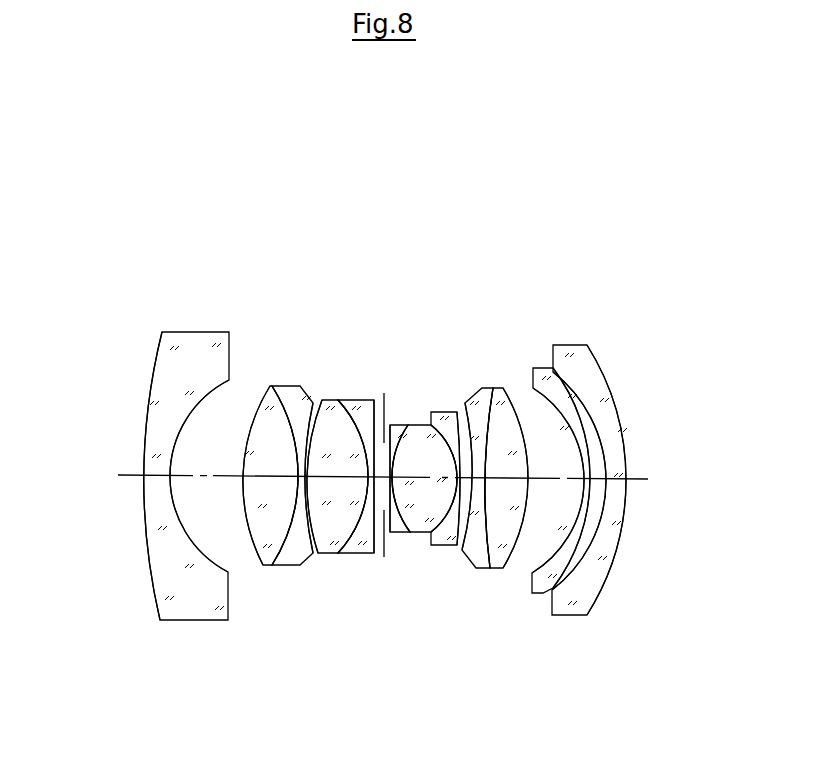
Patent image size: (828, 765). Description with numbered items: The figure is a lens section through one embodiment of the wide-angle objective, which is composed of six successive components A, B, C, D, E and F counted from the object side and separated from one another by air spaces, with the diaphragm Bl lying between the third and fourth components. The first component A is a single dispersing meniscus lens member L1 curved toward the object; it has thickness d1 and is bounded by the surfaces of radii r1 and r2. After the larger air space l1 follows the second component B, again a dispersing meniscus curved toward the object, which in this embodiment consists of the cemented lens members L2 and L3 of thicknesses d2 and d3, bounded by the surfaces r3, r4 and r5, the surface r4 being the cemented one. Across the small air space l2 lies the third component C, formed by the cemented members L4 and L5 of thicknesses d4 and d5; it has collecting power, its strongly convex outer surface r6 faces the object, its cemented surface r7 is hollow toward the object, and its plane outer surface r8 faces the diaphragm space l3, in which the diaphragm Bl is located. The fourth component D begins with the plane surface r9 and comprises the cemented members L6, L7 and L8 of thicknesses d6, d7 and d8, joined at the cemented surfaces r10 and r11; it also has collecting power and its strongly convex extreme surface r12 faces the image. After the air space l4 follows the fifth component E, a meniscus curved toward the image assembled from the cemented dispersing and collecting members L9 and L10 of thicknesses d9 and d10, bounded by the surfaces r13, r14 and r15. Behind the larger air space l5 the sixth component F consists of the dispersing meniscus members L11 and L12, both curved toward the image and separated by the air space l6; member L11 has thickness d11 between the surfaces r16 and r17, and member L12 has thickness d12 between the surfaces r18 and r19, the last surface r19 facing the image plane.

The first lens component A is at (90, 135).
The second lens component B is at (203, 140).
The third lens component C is at (310, 140).
The fourth lens component D is at (453, 143).
The fifth lens component E is at (558, 143).
The sixth lens component F is at (702, 147).
The diaphragm Bl is at (398, 458).
The dispersing meniscus lens member L1 is at (89, 207).
The lens member L2 is at (160, 207).
The lens member L3 is at (195, 207).
The lens member L4 is at (267, 207).
The lens member L5 is at (302, 207).
The lens member L6 is at (374, 207).
The lens member L7 is at (408, 207).
The lens member L8 is at (444, 207).
The lens member L9 is at (515, 207).
The lens member L10 is at (550, 207).
The dispersing meniscus lens member L11 is at (619, 207).
The dispersing meniscus lens member L12 is at (693, 207).
The lens thickness d1 is at (155, 475).
The lens thickness d2 is at (263, 476).
The lens thickness d3 is at (302, 476).
The lens thickness d4 is at (333, 477).
The lens thickness d5 is at (375, 477).
The lens thickness d6 is at (393, 424).
The lens thickness d7 is at (417, 477).
The lens thickness d8 is at (460, 411).
The lens thickness d9 is at (483, 388).
The lens thickness d10 is at (503, 388).
The lens thickness d11 is at (585, 478).
The lens thickness d12 is at (625, 479).
The air space l1 is at (190, 476).
The air space l2 is at (308, 392).
The air space l3 is at (389, 442).
The air space l4 is at (472, 478).
The air space l5 is at (547, 478).
The air space l6 is at (607, 479).
The radius of curvature r1 is at (149, 557).
The radius of curvature r2 is at (184, 530).
The radius of curvature r3 is at (247, 522).
The radius of curvature r4 is at (290, 525).
The radius of curvature r5 is at (308, 527).
The radius of curvature r6 is at (316, 548).
The radius of curvature r7 is at (359, 520).
The radius of curvature r8 is at (374, 535).
The radius of curvature r9 is at (390, 523).
The radius of curvature r10 is at (402, 520).
The radius of curvature r11 is at (438, 525).
The radius of curvature r12 is at (457, 540).
The radius of curvature r13 is at (466, 530).
The radius of curvature r14 is at (486, 528).
The radius of curvature r15 is at (512, 550).
The radius of curvature r16 is at (548, 565).
The radius of curvature r17 is at (570, 565).
The radius of curvature r18 is at (588, 567).
The radius of curvature r19 is at (612, 570).